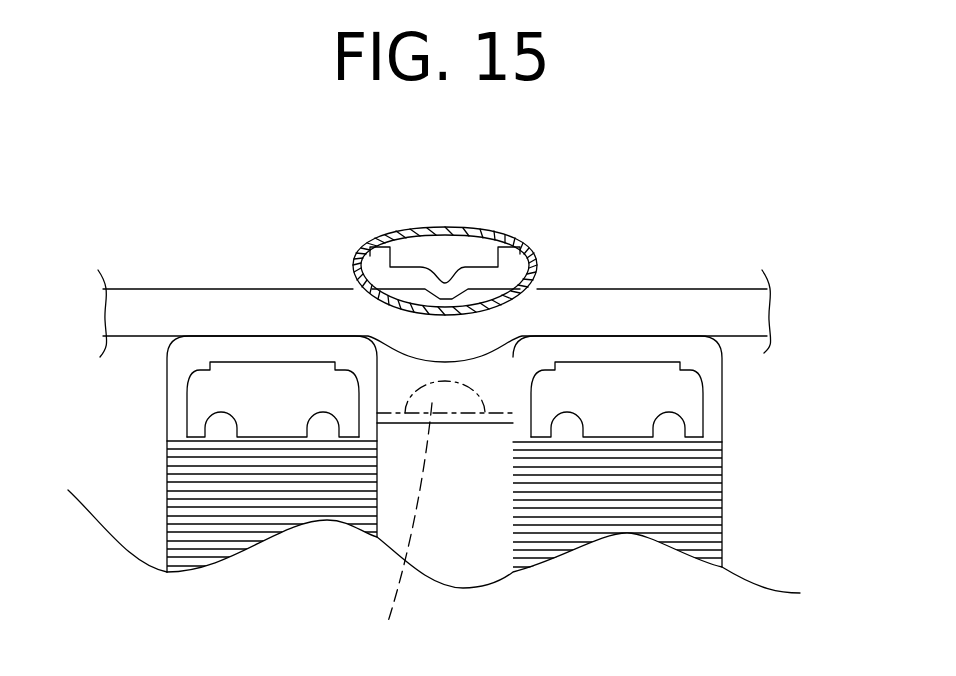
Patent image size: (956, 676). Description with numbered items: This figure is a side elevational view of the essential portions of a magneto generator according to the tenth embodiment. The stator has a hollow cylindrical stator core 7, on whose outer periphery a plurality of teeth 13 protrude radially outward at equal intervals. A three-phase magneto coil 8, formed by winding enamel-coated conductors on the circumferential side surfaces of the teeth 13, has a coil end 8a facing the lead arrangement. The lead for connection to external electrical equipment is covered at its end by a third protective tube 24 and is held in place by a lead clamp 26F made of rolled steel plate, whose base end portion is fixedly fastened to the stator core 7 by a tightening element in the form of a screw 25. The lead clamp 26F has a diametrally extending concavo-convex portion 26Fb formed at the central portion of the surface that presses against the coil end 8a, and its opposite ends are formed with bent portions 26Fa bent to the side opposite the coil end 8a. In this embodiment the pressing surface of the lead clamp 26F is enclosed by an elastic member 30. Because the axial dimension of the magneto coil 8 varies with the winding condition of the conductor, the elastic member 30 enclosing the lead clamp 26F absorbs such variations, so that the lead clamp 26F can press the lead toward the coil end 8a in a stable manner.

The stator core 7 is at (475, 537).
The magneto coil 8 is at (237, 347).
The coil end 8a is at (643, 350).
The teeth 13 is at (213, 508).
The third protective tube 24 is at (635, 308).
The screw 25 is at (398, 534).
The lead clamp 26F is at (477, 275).
The bent portions 26Fa is at (355, 255).
The concavo-convex portion 26Fb is at (445, 295).
The elastic member 30 is at (535, 275).